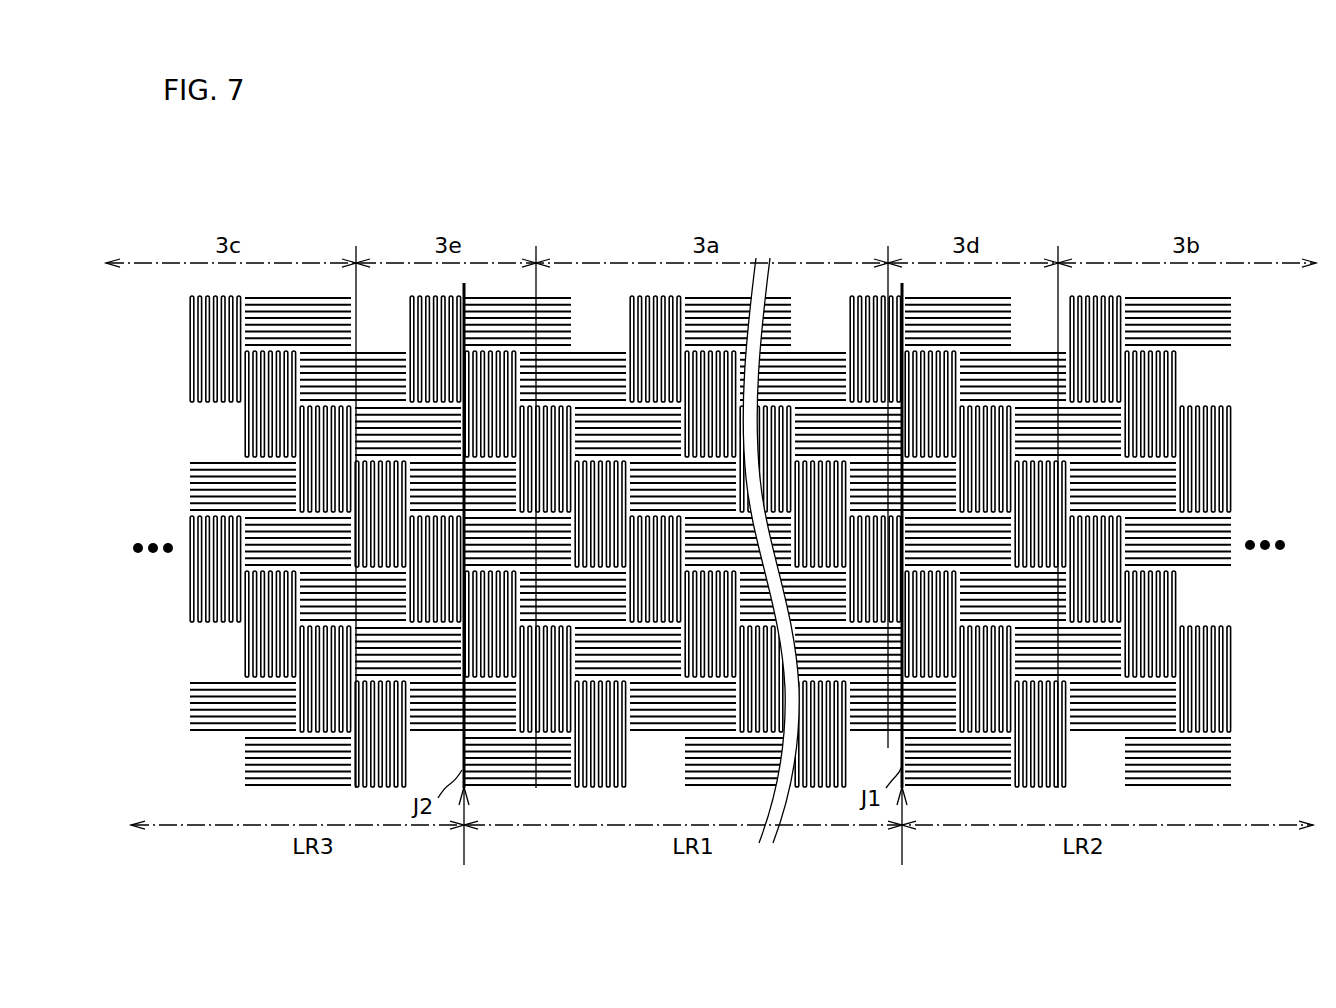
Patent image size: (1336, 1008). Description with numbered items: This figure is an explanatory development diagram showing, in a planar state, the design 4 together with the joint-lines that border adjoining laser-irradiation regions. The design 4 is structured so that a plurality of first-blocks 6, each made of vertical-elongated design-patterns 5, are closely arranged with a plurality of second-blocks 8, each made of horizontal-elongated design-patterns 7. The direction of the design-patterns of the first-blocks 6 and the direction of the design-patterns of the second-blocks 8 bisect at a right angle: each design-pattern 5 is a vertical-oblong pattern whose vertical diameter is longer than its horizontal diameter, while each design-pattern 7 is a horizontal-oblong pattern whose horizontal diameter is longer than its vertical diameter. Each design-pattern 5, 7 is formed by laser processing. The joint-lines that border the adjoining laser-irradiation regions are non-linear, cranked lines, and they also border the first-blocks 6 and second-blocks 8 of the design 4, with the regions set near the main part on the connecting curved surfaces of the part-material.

The design 4 is at (689, 544).
The vertical-elongated design-pattern 5 is at (707, 541).
The first-block 6 is at (180, 332).
The horizontal-elongated design-pattern 7 is at (718, 546).
The second-block 8 is at (230, 451).